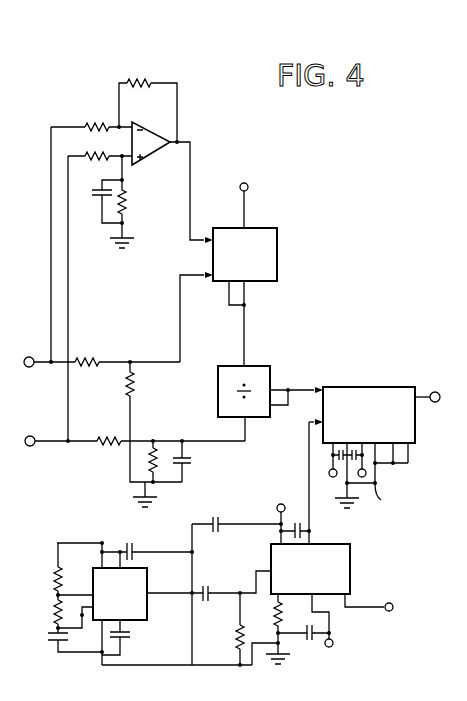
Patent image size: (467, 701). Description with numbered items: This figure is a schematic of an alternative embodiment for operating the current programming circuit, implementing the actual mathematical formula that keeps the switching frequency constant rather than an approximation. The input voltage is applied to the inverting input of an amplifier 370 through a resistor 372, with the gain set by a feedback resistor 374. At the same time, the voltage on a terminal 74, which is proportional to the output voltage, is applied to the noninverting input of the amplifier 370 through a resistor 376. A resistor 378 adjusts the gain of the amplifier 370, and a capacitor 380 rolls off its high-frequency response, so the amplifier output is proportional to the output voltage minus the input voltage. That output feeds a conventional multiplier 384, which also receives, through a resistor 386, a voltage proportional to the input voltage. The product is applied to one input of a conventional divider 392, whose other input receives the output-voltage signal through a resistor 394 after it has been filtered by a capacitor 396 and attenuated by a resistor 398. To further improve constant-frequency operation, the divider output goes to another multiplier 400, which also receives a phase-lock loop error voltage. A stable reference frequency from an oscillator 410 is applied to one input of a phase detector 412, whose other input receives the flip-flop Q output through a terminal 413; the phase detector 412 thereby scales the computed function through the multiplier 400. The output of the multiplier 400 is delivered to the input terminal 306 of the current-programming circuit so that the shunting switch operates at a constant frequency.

The resistor 374 is at (144, 80).
The resistor 372 is at (96, 123).
The resistor 376 is at (100, 153).
The amplifier 370 is at (166, 146).
The resistor 378 is at (128, 208).
The capacitor 380 is at (96, 201).
The multiplier 384 is at (256, 228).
The divider 392 is at (264, 366).
The multiplier 400 is at (371, 387).
The input terminal 306 is at (434, 392).
The resistor 386 is at (90, 366).
The terminal 74 is at (36, 447).
The resistor 394 is at (113, 446).
The resistor 398 is at (156, 452).
The capacitor 396 is at (191, 463).
The oscillator 410 is at (147, 604).
The phase detector 412 is at (350, 576).
The terminal 413 is at (393, 606).